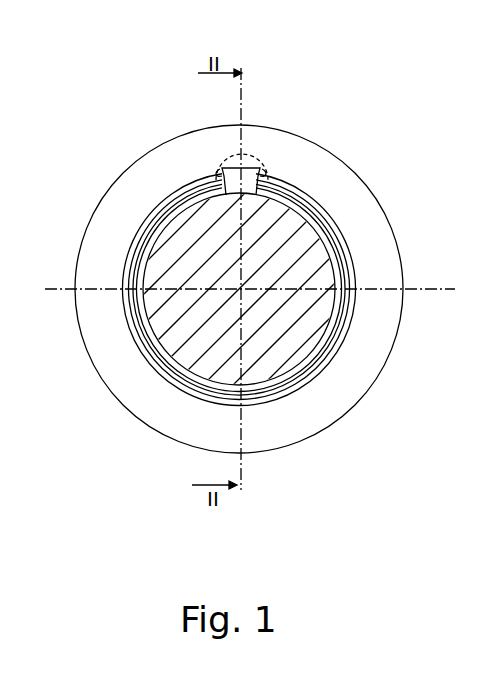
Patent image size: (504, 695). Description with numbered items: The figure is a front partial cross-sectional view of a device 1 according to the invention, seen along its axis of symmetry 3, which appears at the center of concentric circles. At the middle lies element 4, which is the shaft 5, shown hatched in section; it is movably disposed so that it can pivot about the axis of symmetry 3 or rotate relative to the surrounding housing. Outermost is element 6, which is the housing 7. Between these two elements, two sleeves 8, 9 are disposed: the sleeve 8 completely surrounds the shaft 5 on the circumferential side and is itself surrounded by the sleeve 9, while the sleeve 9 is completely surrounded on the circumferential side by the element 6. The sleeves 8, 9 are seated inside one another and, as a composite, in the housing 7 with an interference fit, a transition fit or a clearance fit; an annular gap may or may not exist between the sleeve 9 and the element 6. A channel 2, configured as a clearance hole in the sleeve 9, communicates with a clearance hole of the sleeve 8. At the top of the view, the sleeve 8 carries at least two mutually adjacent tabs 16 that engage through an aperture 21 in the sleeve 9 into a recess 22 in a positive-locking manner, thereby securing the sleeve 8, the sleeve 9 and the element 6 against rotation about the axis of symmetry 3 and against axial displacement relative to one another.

The device 1 is at (314, 55).
The channel 2 is at (238, 202).
The axis of symmetry 3 is at (256, 281).
The element 4 is at (318, 356).
The shaft 5 is at (307, 332).
The element 6 is at (342, 183).
The housing 7 is at (350, 210).
The sleeve 8 is at (350, 264).
The sleeve 9 is at (340, 227).
The tabs 16 is at (218, 167).
The aperture 21 is at (263, 198).
The recess 22 is at (219, 170).